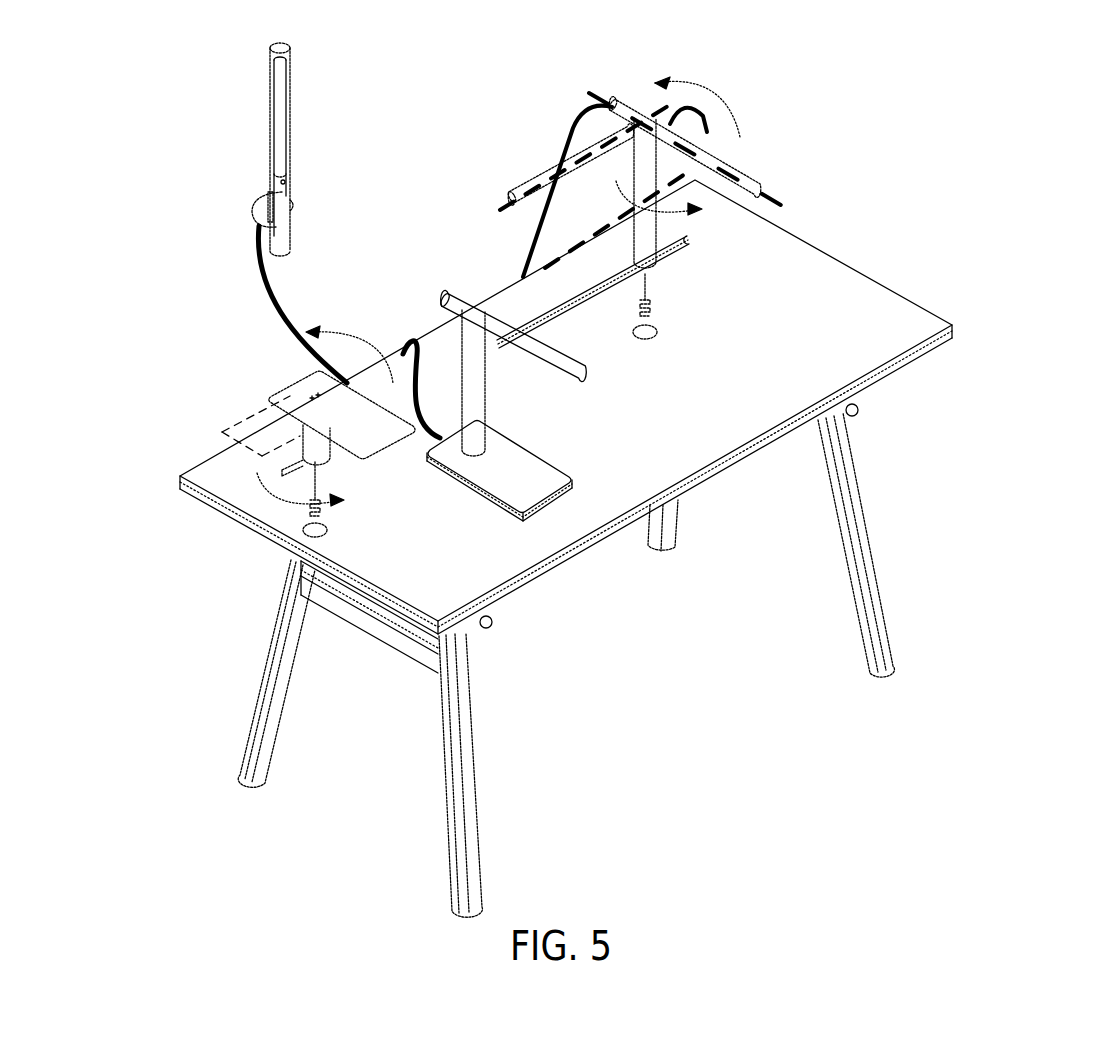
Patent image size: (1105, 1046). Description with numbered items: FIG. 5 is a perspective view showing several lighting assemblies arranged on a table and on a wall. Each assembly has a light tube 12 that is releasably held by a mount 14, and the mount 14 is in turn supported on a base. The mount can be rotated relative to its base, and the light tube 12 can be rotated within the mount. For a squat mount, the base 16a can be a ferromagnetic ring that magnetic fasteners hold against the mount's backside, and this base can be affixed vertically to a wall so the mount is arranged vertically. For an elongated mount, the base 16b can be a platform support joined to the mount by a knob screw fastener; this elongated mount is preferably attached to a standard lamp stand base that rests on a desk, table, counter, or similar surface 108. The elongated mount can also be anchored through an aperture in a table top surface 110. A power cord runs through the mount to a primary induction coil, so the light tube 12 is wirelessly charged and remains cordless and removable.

The light tube 12 is at (285, 90).
The mount 14 is at (470, 354).
The base 16a is at (270, 202).
The base 16b is at (533, 490).
The surface 108 is at (880, 333).
The top surface 110 is at (538, 320).